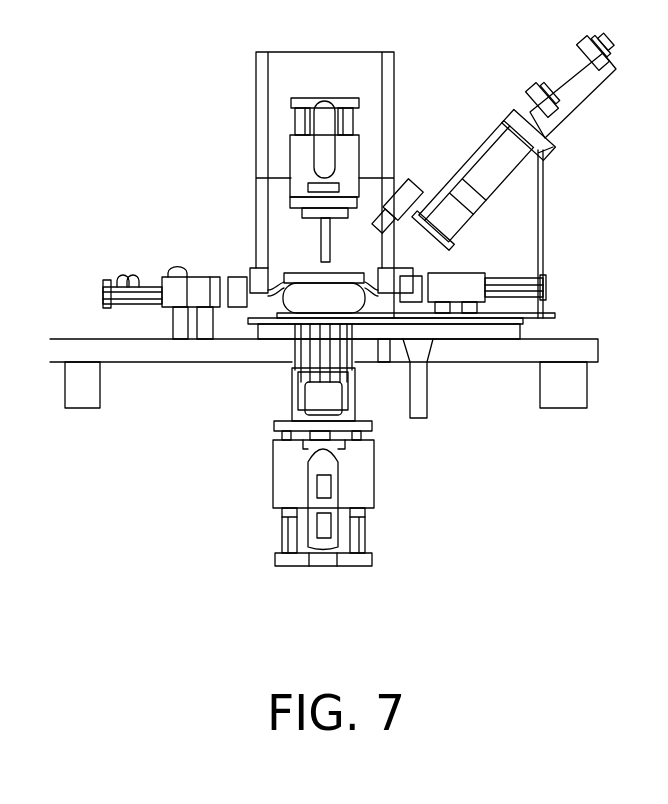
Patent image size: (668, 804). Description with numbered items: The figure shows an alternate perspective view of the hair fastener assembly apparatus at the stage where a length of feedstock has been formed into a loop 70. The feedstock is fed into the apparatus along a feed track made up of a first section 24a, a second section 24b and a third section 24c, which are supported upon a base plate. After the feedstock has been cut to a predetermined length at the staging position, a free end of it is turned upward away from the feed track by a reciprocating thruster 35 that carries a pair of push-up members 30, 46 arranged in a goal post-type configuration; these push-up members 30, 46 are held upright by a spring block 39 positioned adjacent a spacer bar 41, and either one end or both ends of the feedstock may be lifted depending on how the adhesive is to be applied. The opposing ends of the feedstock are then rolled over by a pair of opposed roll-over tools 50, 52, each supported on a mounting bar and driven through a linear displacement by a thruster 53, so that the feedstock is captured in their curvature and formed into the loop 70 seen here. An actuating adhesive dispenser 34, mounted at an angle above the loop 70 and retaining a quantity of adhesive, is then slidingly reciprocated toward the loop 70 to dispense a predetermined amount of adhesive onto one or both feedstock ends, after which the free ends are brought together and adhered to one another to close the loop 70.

The first section of feed track 24a is at (428, 333).
The second section of feed track 24b is at (376, 332).
The third section of feed track 24c is at (282, 283).
The push-up member 30 is at (293, 348).
The actuating adhesive dispenser 34 is at (420, 185).
The reciprocating thruster 35 is at (280, 487).
The spring block 39 is at (293, 377).
The spacer bar 41 is at (293, 403).
The push-up member 46 is at (293, 372).
The roll-over tool 50 is at (257, 267).
The roll-over tool 52 is at (420, 272).
The thruster 53 is at (168, 272).
The loop 70 is at (321, 293).